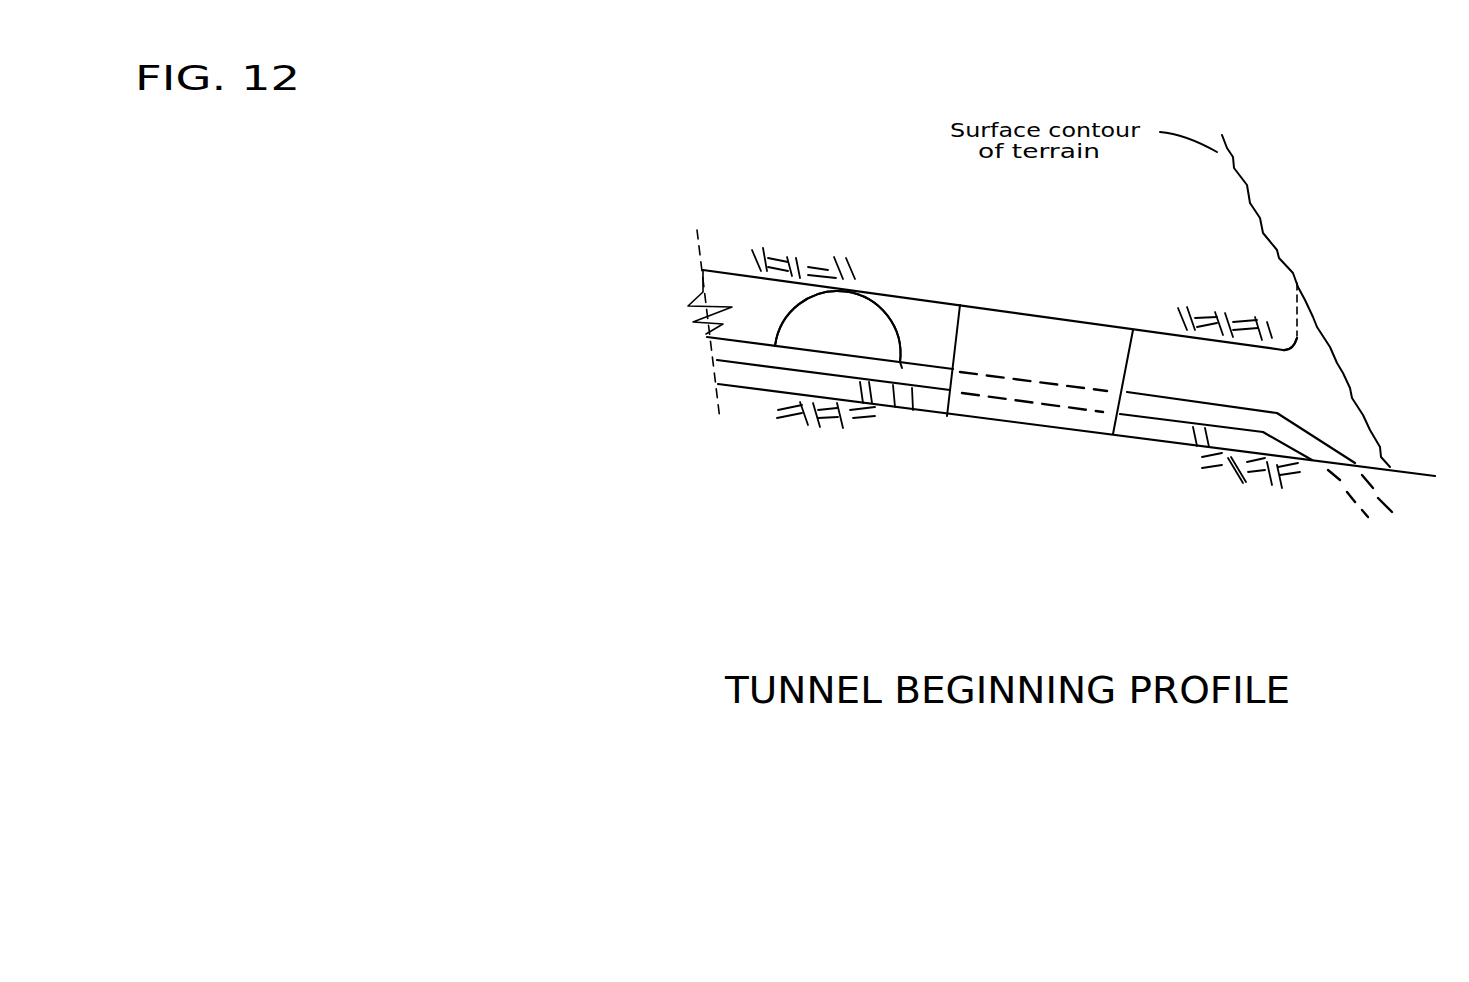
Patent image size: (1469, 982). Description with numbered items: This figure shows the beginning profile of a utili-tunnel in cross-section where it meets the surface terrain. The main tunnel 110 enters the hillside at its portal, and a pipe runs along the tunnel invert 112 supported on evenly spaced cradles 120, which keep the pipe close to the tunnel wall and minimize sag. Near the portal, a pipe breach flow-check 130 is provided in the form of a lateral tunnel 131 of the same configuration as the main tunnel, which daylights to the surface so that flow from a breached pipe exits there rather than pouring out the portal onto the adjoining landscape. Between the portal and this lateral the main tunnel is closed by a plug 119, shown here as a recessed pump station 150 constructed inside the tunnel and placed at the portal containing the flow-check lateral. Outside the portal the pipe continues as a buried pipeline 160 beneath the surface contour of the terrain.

The tunnel portal 110 is at (1280, 324).
The tunnel invert 112 is at (710, 338).
The plug 119 is at (977, 418).
The cradles 120 is at (912, 410).
The pipe breach flow-check 130 is at (667, 250).
The lateral tunnel 131 is at (833, 284).
The pump station 150 is at (1247, 508).
The buried pipeline 160 is at (1350, 494).